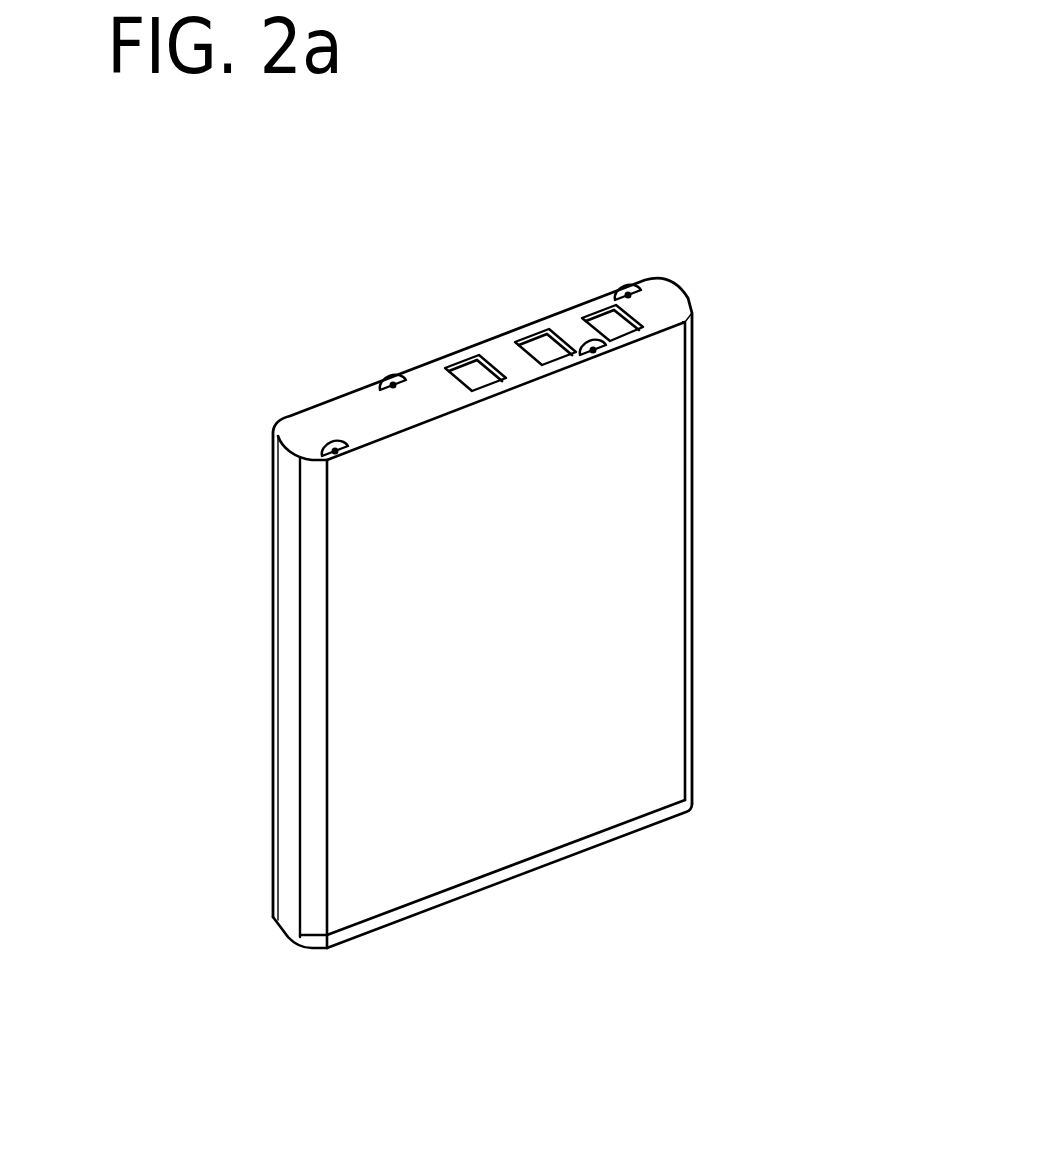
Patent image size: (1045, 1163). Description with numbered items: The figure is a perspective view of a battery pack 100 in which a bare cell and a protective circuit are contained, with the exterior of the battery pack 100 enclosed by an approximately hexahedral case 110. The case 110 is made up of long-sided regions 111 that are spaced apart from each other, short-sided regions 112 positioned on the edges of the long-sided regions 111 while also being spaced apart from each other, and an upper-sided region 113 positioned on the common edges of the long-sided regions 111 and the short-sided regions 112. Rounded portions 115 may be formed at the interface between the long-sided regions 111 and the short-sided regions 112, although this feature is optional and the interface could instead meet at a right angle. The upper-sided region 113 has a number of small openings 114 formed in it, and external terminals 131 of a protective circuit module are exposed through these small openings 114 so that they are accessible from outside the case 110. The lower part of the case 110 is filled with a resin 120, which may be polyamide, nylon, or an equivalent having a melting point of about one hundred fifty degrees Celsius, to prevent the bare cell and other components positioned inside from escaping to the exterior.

The battery pack 100 is at (792, 324).
The case 110 is at (124, 394).
The long-sided regions 111 is at (372, 600).
The short-sided regions 112 is at (287, 492).
The upper-sided region 113 is at (310, 425).
The rounded portions 115 is at (315, 532).
The resin 120 is at (537, 863).
The external terminals 131 is at (532, 335).
The small openings 114 is at (593, 305).